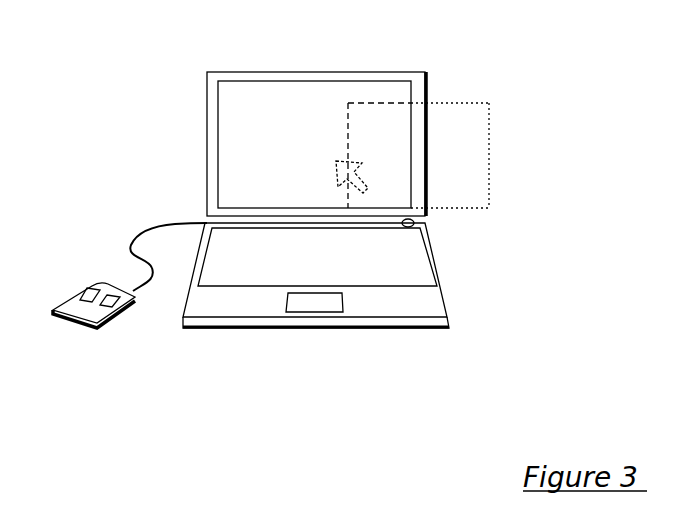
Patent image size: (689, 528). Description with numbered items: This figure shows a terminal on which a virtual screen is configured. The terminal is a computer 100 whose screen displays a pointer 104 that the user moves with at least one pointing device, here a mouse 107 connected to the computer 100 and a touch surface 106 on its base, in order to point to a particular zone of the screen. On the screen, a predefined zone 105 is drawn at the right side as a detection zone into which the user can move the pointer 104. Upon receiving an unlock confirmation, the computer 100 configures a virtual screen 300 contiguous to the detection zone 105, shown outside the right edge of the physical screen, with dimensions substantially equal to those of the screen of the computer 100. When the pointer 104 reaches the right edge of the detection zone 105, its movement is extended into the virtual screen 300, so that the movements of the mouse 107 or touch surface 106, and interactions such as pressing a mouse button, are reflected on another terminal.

The computer 100 is at (240, 70).
The pointer 104 is at (342, 160).
The predefined zone 105 is at (363, 133).
The touch surface 106 is at (330, 298).
The mouse 107 is at (72, 305).
The virtual screen 300 is at (474, 123).